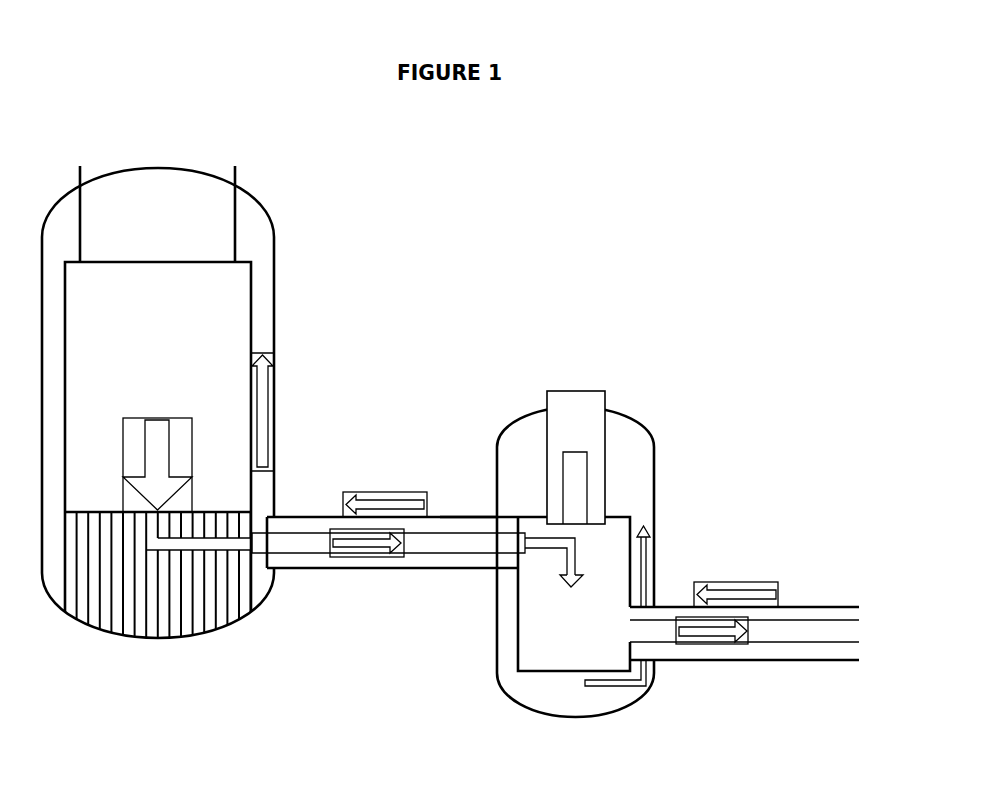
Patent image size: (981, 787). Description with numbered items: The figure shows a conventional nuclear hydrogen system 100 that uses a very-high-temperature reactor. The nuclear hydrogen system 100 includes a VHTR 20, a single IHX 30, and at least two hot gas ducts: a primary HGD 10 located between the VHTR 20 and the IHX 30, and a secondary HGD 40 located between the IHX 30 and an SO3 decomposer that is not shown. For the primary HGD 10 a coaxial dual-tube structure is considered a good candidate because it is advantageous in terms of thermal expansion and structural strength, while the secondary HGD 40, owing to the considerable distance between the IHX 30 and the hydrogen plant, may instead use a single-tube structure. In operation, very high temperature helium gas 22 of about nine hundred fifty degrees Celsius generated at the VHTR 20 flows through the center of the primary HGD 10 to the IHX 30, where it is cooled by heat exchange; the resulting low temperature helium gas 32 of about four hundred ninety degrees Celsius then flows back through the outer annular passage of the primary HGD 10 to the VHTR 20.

The nuclear hydrogen system 100 is at (279, 197).
The VHTR 20 is at (178, 157).
The primary HGD 10 is at (458, 516).
The helium gas 22 is at (370, 558).
The helium gas 32 is at (300, 526).
The IHX 30 is at (548, 657).
The secondary HGD 40 is at (725, 662).